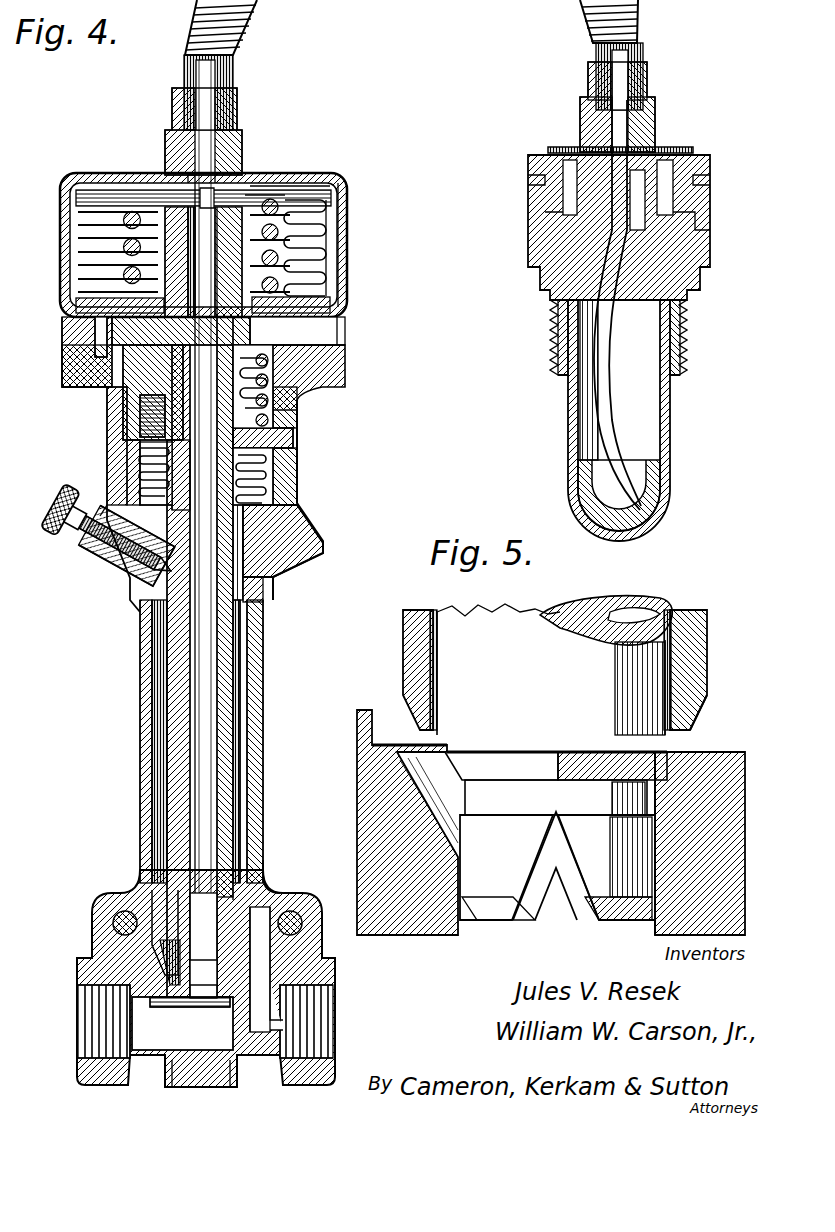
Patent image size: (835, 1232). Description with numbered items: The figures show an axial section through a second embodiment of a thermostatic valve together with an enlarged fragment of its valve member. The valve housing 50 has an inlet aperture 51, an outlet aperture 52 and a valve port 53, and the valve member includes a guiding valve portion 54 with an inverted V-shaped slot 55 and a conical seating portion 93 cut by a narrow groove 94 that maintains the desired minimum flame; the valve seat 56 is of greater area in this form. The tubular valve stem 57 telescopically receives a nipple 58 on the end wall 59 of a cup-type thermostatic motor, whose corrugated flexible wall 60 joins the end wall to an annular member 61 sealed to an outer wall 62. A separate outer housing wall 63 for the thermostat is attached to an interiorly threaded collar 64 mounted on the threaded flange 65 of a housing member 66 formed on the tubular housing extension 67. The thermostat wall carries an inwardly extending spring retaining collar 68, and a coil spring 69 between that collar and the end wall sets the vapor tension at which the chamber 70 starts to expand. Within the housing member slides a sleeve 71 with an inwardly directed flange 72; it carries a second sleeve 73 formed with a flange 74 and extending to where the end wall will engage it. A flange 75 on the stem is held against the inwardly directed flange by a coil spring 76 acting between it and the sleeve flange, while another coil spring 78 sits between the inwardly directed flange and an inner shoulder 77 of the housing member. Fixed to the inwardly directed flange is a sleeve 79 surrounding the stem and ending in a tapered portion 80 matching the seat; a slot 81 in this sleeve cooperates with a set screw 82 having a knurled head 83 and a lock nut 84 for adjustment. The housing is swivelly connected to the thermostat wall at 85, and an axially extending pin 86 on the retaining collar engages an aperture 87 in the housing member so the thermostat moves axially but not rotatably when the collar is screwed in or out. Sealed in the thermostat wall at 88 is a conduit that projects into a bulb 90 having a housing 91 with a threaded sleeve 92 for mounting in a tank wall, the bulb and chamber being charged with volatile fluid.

In FIG. 4, the valve housing 50 is at (303, 898).
In FIG. 4, the inlet aperture 51 is at (330, 1018).
In FIG. 4, the outlet aperture 52 is at (87, 1023).
In FIG. 4, the valve port 53 is at (203, 992).
In FIG. 5, the valve port 53 is at (654, 920).
In FIG. 4, the guiding valve portion 54 is at (222, 973).
In FIG. 5, the guiding valve portion 54 is at (493, 878).
In FIG. 5, the inverted V-shaped slot 55 is at (533, 898).
In FIG. 4, the valve seat 56 is at (178, 968).
In FIG. 5, the valve seat 56 is at (678, 826).
In FIG. 4, the valve stem 57 is at (232, 822).
In FIG. 5, the valve stem 57 is at (584, 699).
In FIG. 4, the nipple 58 is at (236, 212).
In FIG. 4, the end wall 59 is at (285, 195).
In FIG. 4, the corrugated flexible wall 60 is at (310, 253).
In FIG. 5, the corrugated flexible wall 60 is at (373, 712).
In FIG. 4, the annular member 61 is at (345, 296).
In FIG. 4, the outer wall 62 is at (333, 256).
In FIG. 4, the outer housing wall 63 is at (322, 200).
In FIG. 4, the interiorly threaded collar 64 is at (345, 370).
In FIG. 4, the threaded flange 65 is at (318, 392).
In FIG. 4, the housing member 66 is at (293, 514).
In FIG. 4, the tubular housing extension 67 is at (150, 795).
In FIG. 4, the spring retaining collar 68 is at (300, 312).
In FIG. 4, the coil spring 69 is at (322, 213).
In FIG. 4, the chamber 70 is at (308, 192).
In FIG. 4, the sleeve 71 is at (123, 405).
In FIG. 4, the inwardly directed flange 72 is at (125, 453).
In FIG. 4, the second sleeve 73 is at (62, 308).
In FIG. 4, the flange 74 is at (82, 373).
In FIG. 4, the flange 75 is at (293, 440).
In FIG. 4, the coil spring 76 is at (125, 433).
In FIG. 4, the inner shoulder 77 is at (298, 520).
In FIG. 4, the coil spring 78 is at (273, 476).
In FIG. 4, the sleeve 79 is at (240, 702).
In FIG. 5, the sleeve 79 is at (703, 644).
In FIG. 4, the tapered portion 80 is at (270, 892).
In FIG. 5, the tapered portion 80 is at (697, 703).
In FIG. 4, the slot 81 is at (138, 578).
In FIG. 4, the set screw 82 is at (122, 555).
In FIG. 4, the knurled head 83 is at (60, 533).
In FIG. 4, the lock nut 84 is at (75, 545).
In FIG. 4, the swivel connection 85 is at (222, 205).
In FIG. 4, the axially extending pin 86 is at (100, 332).
In FIG. 4, the aperture 87 is at (90, 393).
In FIG. 4, the seal 88 is at (170, 163).
In FIG. 4, the bulb 90 is at (650, 442).
In FIG. 4, the housing 91 is at (697, 232).
In FIG. 4, the threaded sleeve 92 is at (685, 330).
In FIG. 4, the conical seating portion 93 is at (178, 948).
In FIG. 5, the conical seating portion 93 is at (469, 764).
In FIG. 5, the narrow groove 94 is at (571, 748).